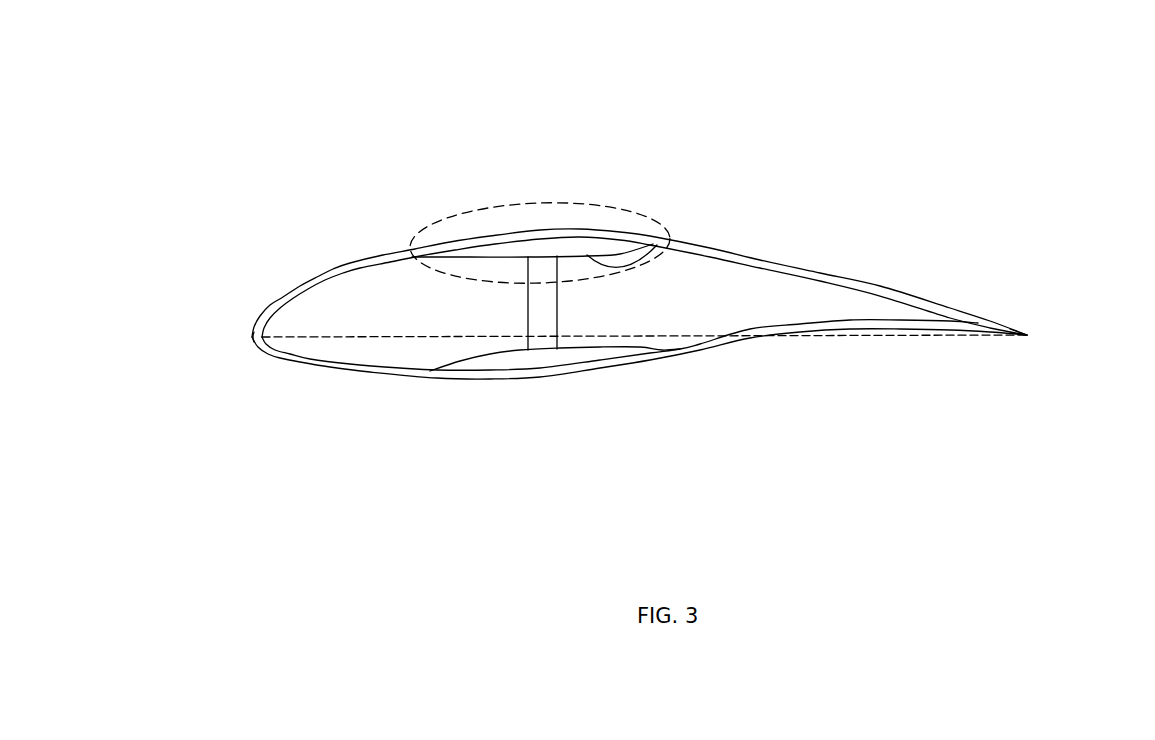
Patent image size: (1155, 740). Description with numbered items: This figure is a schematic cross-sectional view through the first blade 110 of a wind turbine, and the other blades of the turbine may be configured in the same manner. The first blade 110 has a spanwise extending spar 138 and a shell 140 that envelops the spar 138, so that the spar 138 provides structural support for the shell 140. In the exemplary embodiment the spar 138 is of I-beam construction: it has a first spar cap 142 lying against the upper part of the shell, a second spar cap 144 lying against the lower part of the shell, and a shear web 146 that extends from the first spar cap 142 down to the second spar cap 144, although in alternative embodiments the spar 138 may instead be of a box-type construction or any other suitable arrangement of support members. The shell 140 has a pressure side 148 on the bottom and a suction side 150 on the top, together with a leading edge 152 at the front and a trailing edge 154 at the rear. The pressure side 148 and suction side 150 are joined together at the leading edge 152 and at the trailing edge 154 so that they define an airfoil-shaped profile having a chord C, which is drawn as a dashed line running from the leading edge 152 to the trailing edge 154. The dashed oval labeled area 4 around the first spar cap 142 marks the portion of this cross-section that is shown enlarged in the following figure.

The first blade 110 is at (232, 109).
The shell 140 is at (326, 255).
The chord C is at (392, 335).
The area 4 is at (597, 206).
The first spar cap 142 is at (655, 245).
The suction side 150 is at (760, 260).
The shear web 146 is at (560, 298).
The trailing edge 154 is at (1030, 334).
The leading edge 152 is at (252, 340).
The spar 138 is at (505, 346).
The second spar cap 144 is at (610, 353).
The pressure side 148 is at (708, 353).